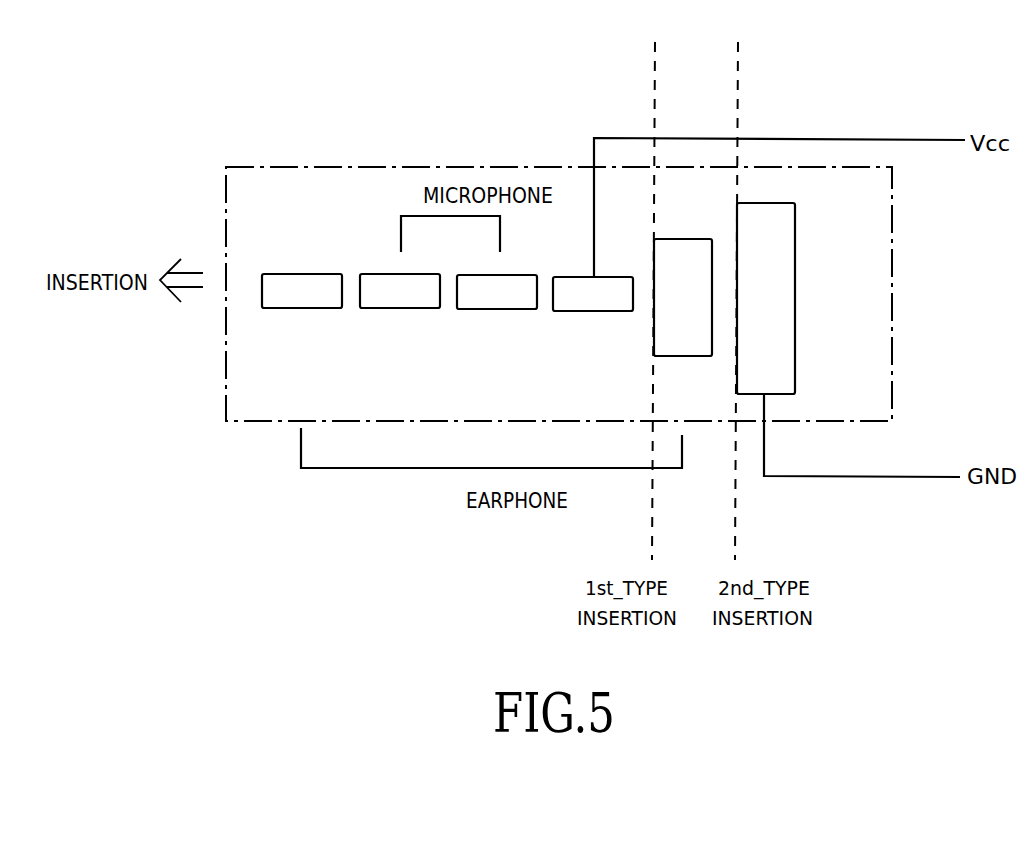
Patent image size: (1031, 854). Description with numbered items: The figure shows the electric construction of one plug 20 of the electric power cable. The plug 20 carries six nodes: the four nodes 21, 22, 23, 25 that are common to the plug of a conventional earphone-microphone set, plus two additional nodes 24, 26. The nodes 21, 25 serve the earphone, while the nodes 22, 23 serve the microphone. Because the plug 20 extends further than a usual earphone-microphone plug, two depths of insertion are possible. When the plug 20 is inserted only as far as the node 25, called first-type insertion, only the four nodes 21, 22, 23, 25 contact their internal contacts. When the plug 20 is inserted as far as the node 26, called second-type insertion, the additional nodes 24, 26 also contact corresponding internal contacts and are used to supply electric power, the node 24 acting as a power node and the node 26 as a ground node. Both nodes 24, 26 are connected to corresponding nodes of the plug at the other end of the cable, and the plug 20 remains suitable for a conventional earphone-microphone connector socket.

The plug 20 is at (893, 300).
The node 21 is at (324, 309).
The node 22 is at (424, 309).
The node 23 is at (516, 310).
The additional node 24 is at (610, 312).
The node 25 is at (693, 357).
The additional node 26 is at (796, 300).